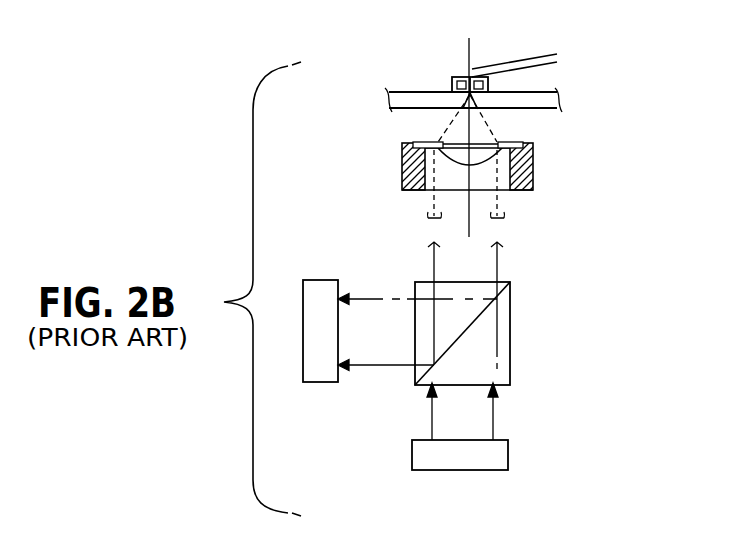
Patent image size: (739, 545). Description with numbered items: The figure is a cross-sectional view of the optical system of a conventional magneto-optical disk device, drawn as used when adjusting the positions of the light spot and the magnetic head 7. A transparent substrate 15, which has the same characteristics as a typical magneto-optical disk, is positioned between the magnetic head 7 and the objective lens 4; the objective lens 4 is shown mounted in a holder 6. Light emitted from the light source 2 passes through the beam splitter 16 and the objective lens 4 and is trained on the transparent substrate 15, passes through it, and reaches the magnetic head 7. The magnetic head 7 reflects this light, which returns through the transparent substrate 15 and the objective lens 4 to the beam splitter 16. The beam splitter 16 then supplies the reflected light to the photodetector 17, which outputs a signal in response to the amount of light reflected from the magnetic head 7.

The light source 2 is at (500, 455).
The objective lens 4 is at (447, 141).
The lens holder 6 is at (532, 172).
The magnetic head 7 is at (452, 85).
The transparent substrate 15 is at (557, 100).
The beam splitter 16 is at (512, 327).
The photodetector 17 is at (321, 372).